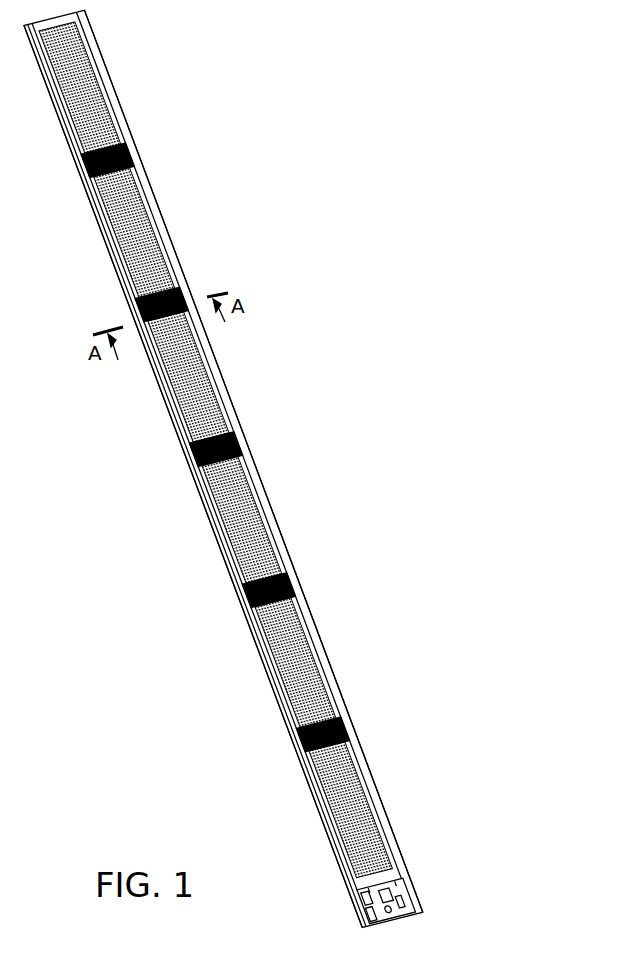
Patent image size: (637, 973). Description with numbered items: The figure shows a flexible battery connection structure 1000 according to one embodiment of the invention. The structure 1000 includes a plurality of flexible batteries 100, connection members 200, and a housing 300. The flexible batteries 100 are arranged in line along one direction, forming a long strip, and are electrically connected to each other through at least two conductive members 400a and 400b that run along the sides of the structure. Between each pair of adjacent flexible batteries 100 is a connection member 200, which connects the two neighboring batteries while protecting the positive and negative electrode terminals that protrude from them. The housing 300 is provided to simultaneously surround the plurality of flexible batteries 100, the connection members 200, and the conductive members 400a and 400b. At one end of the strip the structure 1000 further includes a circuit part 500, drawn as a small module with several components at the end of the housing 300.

The flexible battery connection structure 1000 is at (406, 152).
The flexible battery 100 is at (92, 79).
The connection member 200 is at (131, 155).
The housing 300 is at (167, 412).
The conductive member 400a is at (272, 680).
The conductive member 400b is at (339, 685).
The circuit part 500 is at (408, 890).